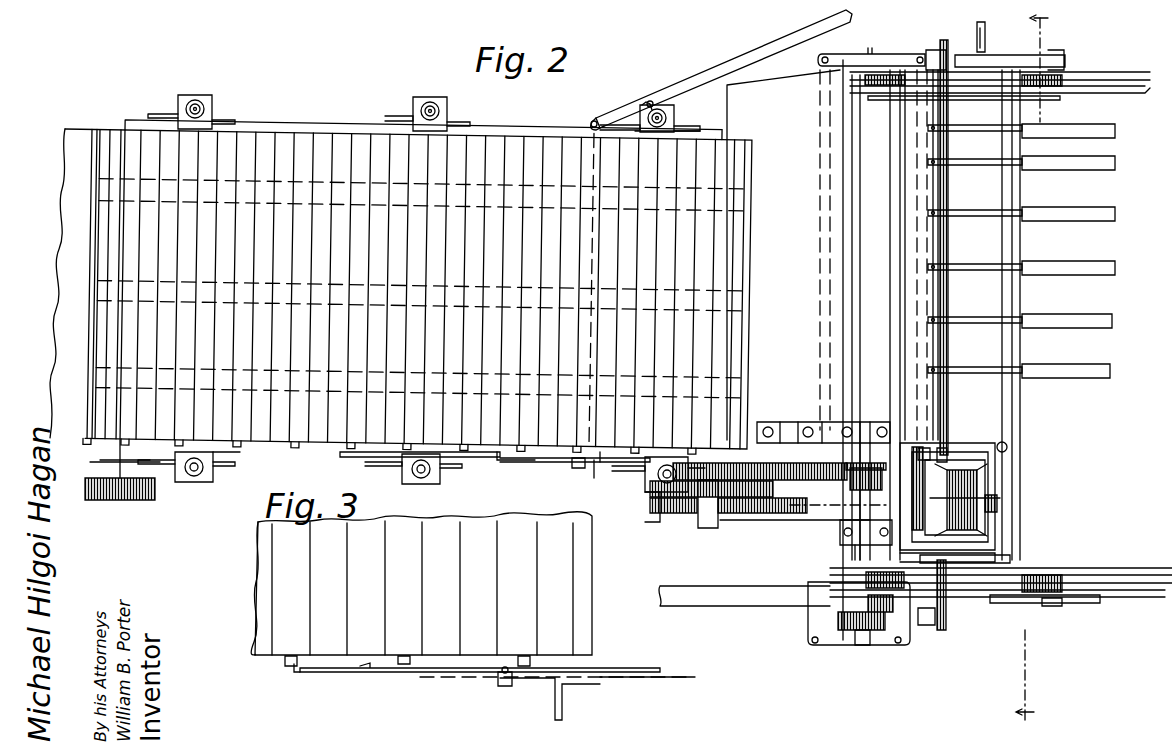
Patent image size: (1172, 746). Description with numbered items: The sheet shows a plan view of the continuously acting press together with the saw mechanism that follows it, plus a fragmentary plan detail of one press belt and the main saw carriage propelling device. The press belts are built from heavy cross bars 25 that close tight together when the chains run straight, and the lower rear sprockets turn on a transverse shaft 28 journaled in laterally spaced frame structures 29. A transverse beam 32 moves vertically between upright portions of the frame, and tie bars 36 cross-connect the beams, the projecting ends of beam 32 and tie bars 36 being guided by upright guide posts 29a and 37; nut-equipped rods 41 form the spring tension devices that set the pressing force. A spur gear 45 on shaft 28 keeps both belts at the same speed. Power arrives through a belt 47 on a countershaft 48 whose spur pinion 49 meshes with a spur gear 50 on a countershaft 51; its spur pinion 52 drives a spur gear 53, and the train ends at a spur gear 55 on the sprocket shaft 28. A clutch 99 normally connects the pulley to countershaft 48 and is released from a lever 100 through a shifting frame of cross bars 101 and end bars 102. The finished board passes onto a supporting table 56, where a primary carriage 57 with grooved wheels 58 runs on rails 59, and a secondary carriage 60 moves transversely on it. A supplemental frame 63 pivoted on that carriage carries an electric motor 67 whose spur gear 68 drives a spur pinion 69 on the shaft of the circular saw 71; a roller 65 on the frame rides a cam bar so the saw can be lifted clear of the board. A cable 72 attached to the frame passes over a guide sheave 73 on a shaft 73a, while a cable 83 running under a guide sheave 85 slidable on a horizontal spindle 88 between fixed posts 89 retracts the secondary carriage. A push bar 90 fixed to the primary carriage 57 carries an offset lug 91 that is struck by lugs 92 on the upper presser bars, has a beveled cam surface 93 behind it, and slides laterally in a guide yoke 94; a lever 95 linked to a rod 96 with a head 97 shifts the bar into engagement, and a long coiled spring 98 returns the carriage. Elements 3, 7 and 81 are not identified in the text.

In FIG. 2, the frame bracket 3 is at (213, 462).
In FIG. 2, the section line 7 is at (1035, 370).
In FIG. 2, the cross bars 25 is at (400, 287).
In FIG. 3, the cross bars 25 is at (421, 583).
In FIG. 2, the transverse shaft 28 is at (707, 528).
In FIG. 2, the frame structures 29 is at (836, 412).
In FIG. 2, the upright guide posts 29a is at (633, 112).
In FIG. 3, the upright guide posts 29a is at (568, 716).
In FIG. 2, the transverse beam 32 is at (660, 133).
In FIG. 2, the tie bars 36 is at (208, 128).
In FIG. 2, the upright guide posts 37 is at (165, 115).
In FIG. 2, the nut-equipped rods 41 is at (212, 104).
In FIG. 2, the spur gear 45 is at (705, 465).
In FIG. 2, the power-driven belt 47 is at (760, 604).
In FIG. 2, the countershaft 48 is at (862, 544).
In FIG. 2, the spur pinion 49 is at (854, 483).
In FIG. 2, the spur gear 50 is at (815, 475).
In FIG. 2, the countershaft 51 is at (782, 437).
In FIG. 2, the spur pinion 52 is at (775, 508).
In FIG. 2, the spur gear 53 is at (690, 497).
In FIG. 2, the spur gear 55 is at (700, 487).
In FIG. 2, the supporting table 56 is at (813, 315).
In FIG. 2, the primary carriage 57 is at (890, 90).
In FIG. 2, the grooved wheels 58 is at (845, 86).
In FIG. 2, the rails 59 is at (1130, 90).
In FIG. 2, the secondary carriage 60 is at (990, 560).
In FIG. 2, the supplemental frame 63 is at (1000, 468).
In FIG. 2, the roller 65 is at (1006, 446).
In FIG. 2, the electric motor 67 is at (978, 500).
In FIG. 2, the spur gear 68 is at (918, 520).
In FIG. 2, the spur pinion 69 is at (930, 448).
In FIG. 2, the circular saw 71 is at (940, 430).
In FIG. 2, the cable 72 is at (945, 262).
In FIG. 2, the guide sheave 73 is at (952, 45).
In FIG. 2, the shaft 73a is at (1030, 60).
In FIG. 2, the pin 81 is at (988, 40).
In FIG. 2, the cable or chain 83 is at (944, 615).
In FIG. 2, the guide sheave 85 is at (938, 610).
In FIG. 2, the horizontal spindle 88 is at (1010, 600).
In FIG. 2, the fixed posts 89 is at (1052, 600).
In FIG. 2, the push bar 90 is at (602, 472).
In FIG. 3, the push bar 90 is at (557, 690).
In FIG. 2, the offset lug 91 is at (496, 458).
In FIG. 3, the offset lug 91 is at (295, 670).
In FIG. 2, the lugs 92 is at (352, 452).
In FIG. 3, the lugs 92 is at (290, 660).
In FIG. 2, the beveled cam surface 93 is at (540, 460).
In FIG. 3, the beveled cam surface 93 is at (363, 672).
In FIG. 2, the guide yoke 94 is at (608, 452).
In FIG. 3, the guide yoke 94 is at (505, 668).
In FIG. 2, the lever 95 is at (690, 90).
In FIG. 2, the rod 96 is at (590, 158).
In FIG. 2, the head or bar 97 is at (577, 466).
In FIG. 2, the coiled spring 98 is at (830, 510).
In FIG. 2, the clutch 99 is at (852, 632).
In FIG. 2, the lever 100 is at (868, 58).
In FIG. 2, the cross bars 101 is at (836, 70).
In FIG. 2, the end bars 102 is at (935, 58).